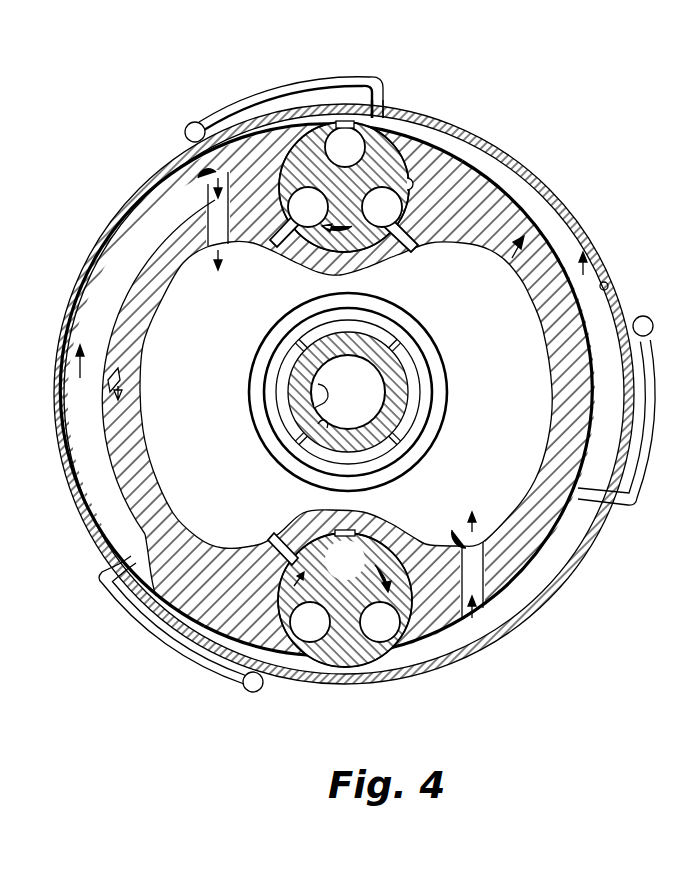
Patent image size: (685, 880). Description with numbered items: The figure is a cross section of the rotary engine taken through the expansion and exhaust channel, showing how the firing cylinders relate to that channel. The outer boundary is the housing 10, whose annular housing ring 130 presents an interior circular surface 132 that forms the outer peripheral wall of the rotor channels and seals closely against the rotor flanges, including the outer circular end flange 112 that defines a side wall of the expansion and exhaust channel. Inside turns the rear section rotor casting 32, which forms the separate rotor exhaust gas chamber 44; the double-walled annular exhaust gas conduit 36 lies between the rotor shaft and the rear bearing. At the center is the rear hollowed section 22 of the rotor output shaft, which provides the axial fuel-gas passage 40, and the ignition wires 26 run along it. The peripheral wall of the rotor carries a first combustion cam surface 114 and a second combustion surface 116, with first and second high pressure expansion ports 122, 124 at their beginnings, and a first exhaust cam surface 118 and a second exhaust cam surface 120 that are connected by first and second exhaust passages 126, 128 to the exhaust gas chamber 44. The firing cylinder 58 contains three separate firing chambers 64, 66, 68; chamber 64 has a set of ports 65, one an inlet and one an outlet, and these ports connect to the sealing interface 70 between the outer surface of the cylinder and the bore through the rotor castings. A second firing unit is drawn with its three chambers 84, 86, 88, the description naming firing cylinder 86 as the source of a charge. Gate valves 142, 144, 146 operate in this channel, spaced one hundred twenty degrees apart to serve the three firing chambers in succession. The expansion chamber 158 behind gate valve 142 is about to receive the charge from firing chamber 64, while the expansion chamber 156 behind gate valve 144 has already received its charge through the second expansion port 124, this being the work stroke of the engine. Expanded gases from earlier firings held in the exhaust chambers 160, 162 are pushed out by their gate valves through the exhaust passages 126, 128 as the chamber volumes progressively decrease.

The housing 10 is at (317, 394).
The rear hollowed section 22 is at (322, 430).
The ignition wires 26 is at (324, 403).
The rear section rotor casting 32 is at (259, 201).
The double-walled annular exhaust gas conduit 36 is at (390, 345).
The axial fuel-gas passage 40 is at (358, 386).
The rotor exhaust gas chamber 44 is at (224, 313).
The firing cylinder 58 is at (357, 191).
The firing chamber 64 is at (345, 147).
The set of ports 65 is at (343, 121).
The firing chamber 66 is at (320, 218).
The firing chamber 68 is at (394, 218).
The sealing interface 70 is at (409, 184).
The lower pump housing 84 is at (357, 571).
The firing cylinder 86 is at (322, 633).
The pump gear 88 is at (392, 633).
The outer circular end flange 112 is at (64, 345).
The first combustion cam surface 114 is at (527, 203).
The second combustion surface 116 is at (155, 624).
The first exhaust cam surface 118 is at (128, 270).
The second exhaust cam surface 120 is at (544, 594).
The first high pressure expansion port 122 is at (388, 106).
The second high pressure expansion port 124 is at (310, 675).
The first exhaust passage 126 is at (215, 210).
The second exhaust passage 128 is at (467, 542).
The annular housing ring 130 is at (628, 378).
The interior circular surface 132 is at (604, 284).
The gate valve 142 is at (283, 90).
The gate valve 144 is at (112, 602).
The gate valve 146 is at (640, 508).
The expansion chamber 156 is at (164, 581).
The expansion chamber 158 is at (531, 196).
The exhaust chamber 160 is at (566, 577).
The exhaust chamber 162 is at (102, 460).